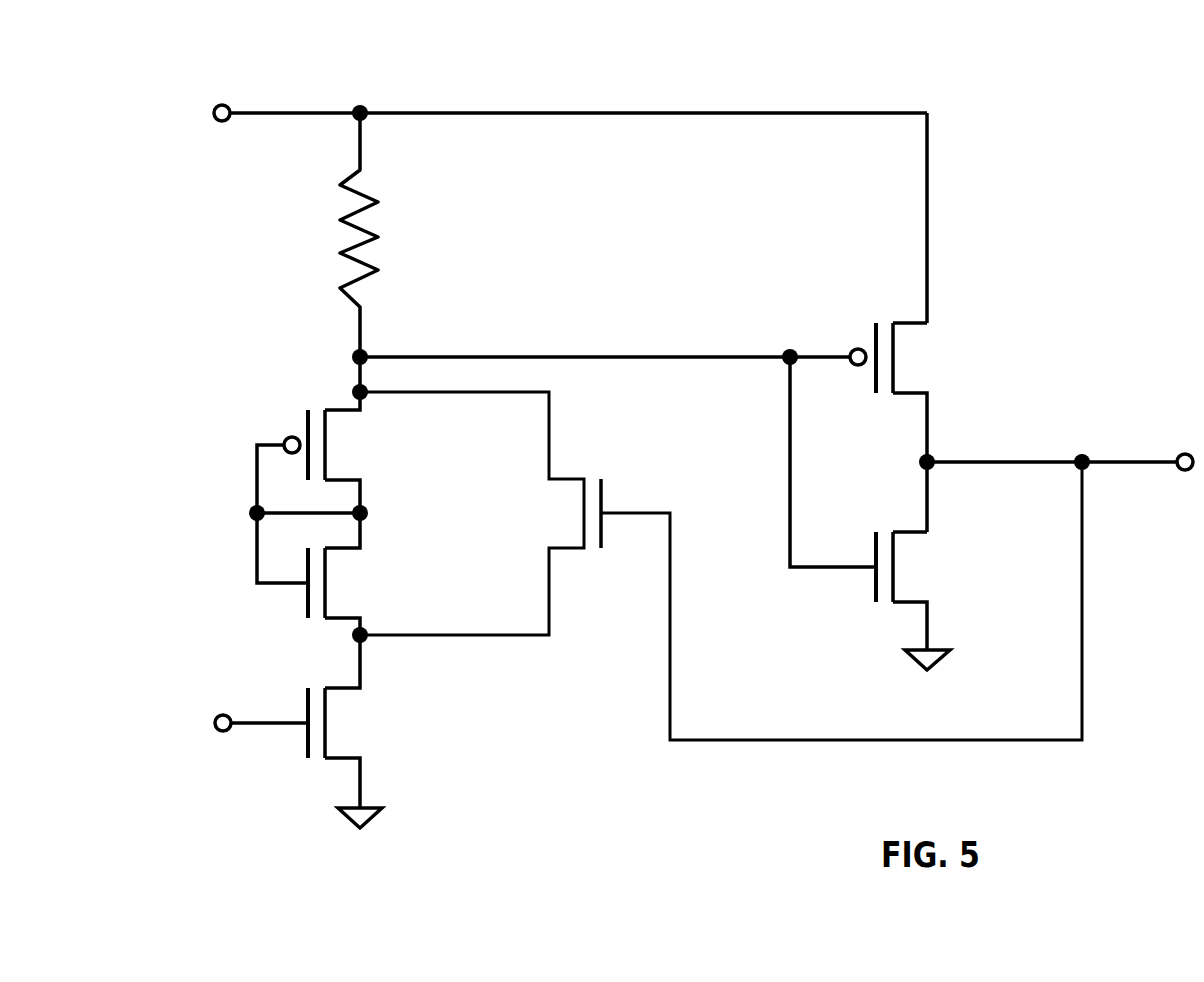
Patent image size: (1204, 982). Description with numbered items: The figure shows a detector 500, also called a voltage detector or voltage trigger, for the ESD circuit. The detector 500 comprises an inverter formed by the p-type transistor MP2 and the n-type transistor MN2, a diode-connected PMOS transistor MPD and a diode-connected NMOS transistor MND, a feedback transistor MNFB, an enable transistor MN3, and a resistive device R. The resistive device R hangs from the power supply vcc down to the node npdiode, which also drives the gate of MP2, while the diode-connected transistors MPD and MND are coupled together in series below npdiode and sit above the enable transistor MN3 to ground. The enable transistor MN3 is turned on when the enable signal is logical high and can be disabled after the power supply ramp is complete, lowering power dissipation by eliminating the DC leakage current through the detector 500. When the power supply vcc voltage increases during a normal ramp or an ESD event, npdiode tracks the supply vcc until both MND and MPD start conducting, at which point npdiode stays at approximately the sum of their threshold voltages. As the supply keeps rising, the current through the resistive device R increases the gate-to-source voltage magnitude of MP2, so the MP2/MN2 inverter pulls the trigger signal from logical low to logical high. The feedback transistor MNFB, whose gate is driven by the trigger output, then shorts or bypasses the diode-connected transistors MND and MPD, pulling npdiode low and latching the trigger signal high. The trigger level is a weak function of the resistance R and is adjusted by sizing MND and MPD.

The detector 500 is at (738, 61).
The power supply VCC vcc is at (570, 203).
The resistive device R is at (390, 252).
The node npdiode is at (601, 346).
The diode-connected PMOS transistor MPD is at (343, 448).
The diode-connected NMOS transistor MND is at (339, 574).
The feedback transistor MNFB is at (721, 566).
The p-type transistor MP2 is at (926, 427).
The n-type transistor MN2 is at (896, 513).
The enable transistor MN3 is at (369, 731).
The trigger signal trigger is at (1056, 449).
The enable signal enable is at (261, 707).